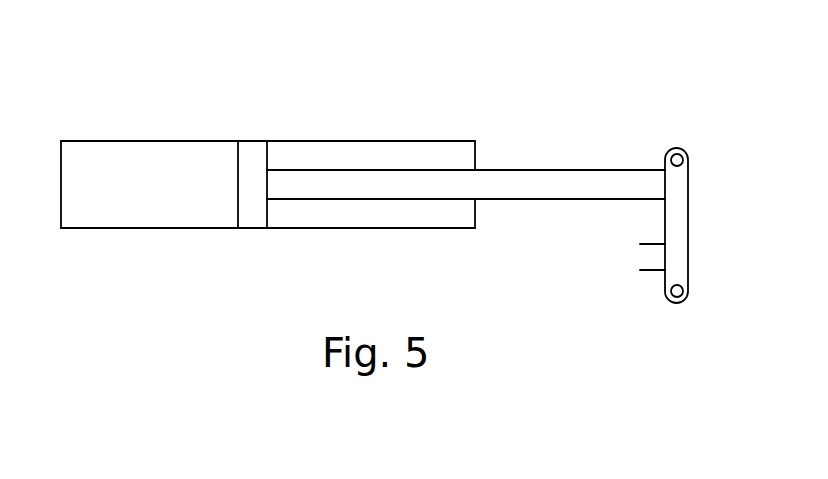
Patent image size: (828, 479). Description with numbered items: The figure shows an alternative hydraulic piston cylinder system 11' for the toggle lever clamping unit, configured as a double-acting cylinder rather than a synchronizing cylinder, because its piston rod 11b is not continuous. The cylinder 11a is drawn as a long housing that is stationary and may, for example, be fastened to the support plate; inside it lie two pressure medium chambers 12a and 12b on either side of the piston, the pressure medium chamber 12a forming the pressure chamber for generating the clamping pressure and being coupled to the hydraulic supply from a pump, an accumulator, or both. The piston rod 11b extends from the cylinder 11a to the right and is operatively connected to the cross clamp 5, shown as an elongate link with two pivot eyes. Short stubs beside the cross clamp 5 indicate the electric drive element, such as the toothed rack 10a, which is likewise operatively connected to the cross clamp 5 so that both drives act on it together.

The cross clamp 5 is at (678, 225).
The toothed rack 10a is at (650, 257).
The alternative piston cylinder system 11' is at (268, 142).
The cylinder 11a is at (297, 140).
The piston rod 11b is at (582, 190).
The pressure medium chamber 12a is at (148, 155).
The pressure medium chamber 12b is at (442, 157).